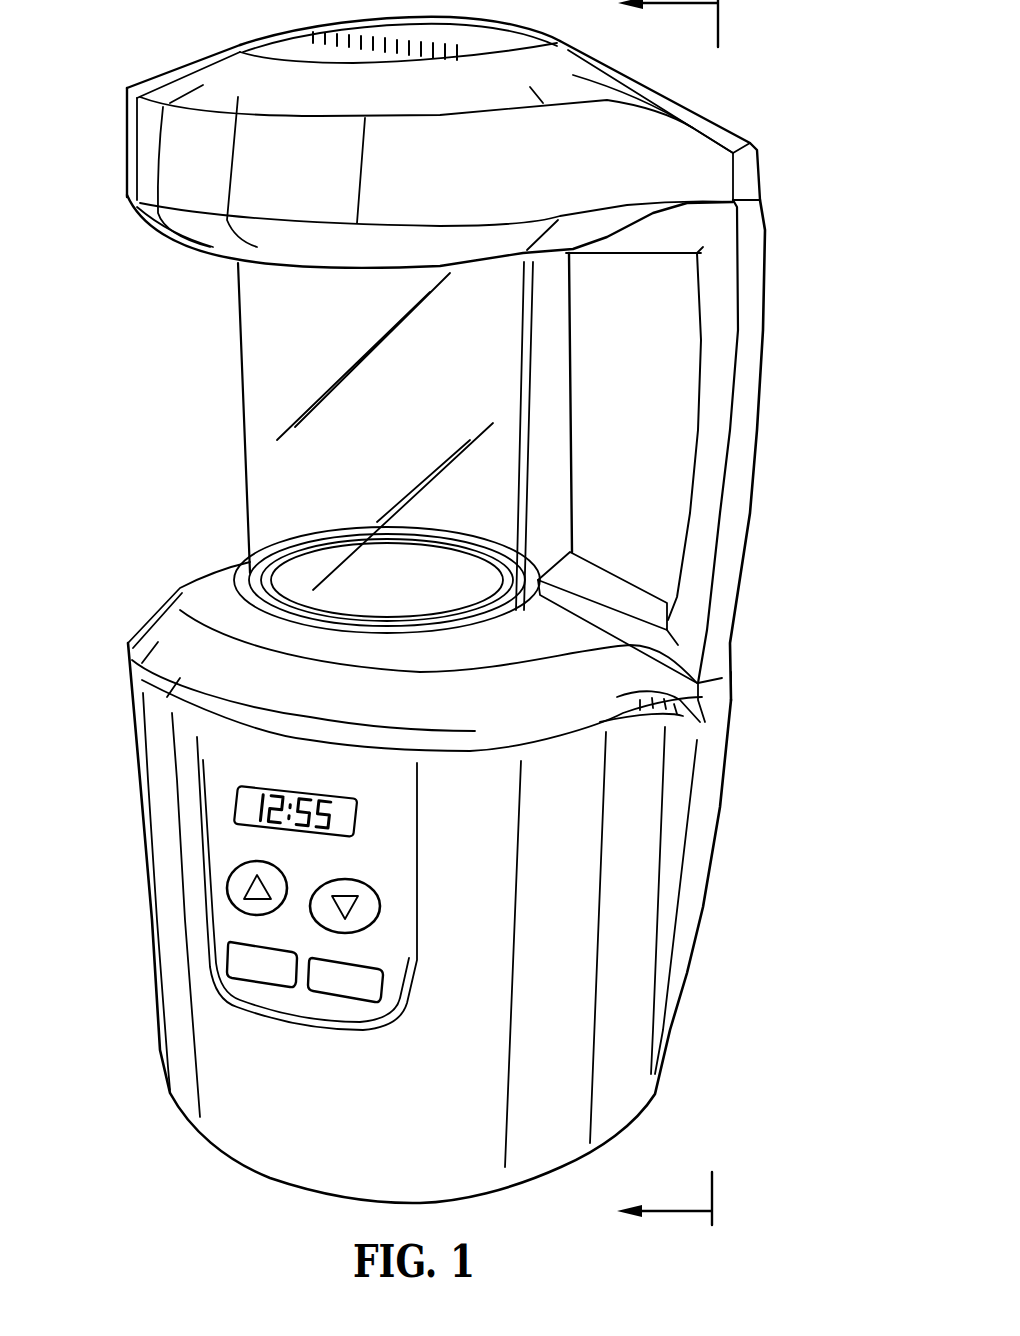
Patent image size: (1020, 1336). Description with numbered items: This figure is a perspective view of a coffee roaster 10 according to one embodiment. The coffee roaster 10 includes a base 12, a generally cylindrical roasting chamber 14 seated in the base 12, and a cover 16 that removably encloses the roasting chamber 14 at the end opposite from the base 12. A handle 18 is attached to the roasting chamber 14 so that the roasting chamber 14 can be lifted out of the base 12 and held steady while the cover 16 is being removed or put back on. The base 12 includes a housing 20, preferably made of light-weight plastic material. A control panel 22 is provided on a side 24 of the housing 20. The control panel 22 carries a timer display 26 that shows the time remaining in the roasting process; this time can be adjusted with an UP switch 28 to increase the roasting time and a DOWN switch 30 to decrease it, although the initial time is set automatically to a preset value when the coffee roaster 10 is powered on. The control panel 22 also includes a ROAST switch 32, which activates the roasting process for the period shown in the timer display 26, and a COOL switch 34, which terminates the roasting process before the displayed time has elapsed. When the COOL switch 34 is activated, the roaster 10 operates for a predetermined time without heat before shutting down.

The coffee roaster 10 is at (742, 90).
The base 12 is at (138, 877).
The roasting chamber 14 is at (240, 469).
The cover 16 is at (126, 121).
The handle 18 is at (748, 425).
The housing 20 is at (153, 1035).
The control panel 22 is at (230, 848).
The side 24 is at (205, 975).
The timer display 26 is at (237, 803).
The UP switch 28 is at (228, 893).
The DOWN switch 30 is at (356, 890).
The ROAST switch 32 is at (258, 975).
The COOL switch 34 is at (366, 996).